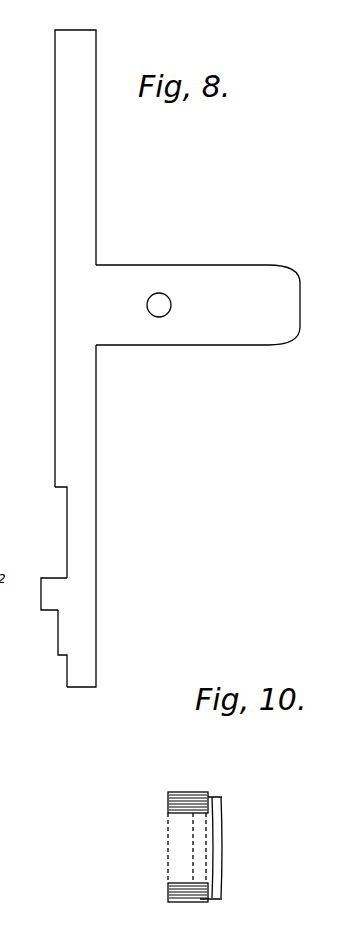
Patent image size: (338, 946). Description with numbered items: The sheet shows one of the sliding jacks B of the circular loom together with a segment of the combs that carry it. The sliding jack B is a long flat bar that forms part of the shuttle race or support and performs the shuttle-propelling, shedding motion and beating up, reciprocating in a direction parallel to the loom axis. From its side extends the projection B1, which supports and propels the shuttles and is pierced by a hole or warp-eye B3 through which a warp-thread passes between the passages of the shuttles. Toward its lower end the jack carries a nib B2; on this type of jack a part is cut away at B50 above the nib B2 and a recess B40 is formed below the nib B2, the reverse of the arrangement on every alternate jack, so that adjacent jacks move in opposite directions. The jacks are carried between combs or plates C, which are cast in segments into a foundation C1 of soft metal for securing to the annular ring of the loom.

In FIG. 8, the sliding jack B is at (75, 358).
In FIG. 8, the projection B1 is at (198, 305).
In FIG. 8, the warp-eye B3 is at (147, 303).
In FIG. 8, the cut-away part B50 is at (56, 532).
In FIG. 8, the nib B2 is at (46, 595).
In FIG. 8, the recess B40 is at (67, 656).
In FIG. 10, the comb C is at (176, 849).
In FIG. 10, the foundation C1 is at (222, 836).